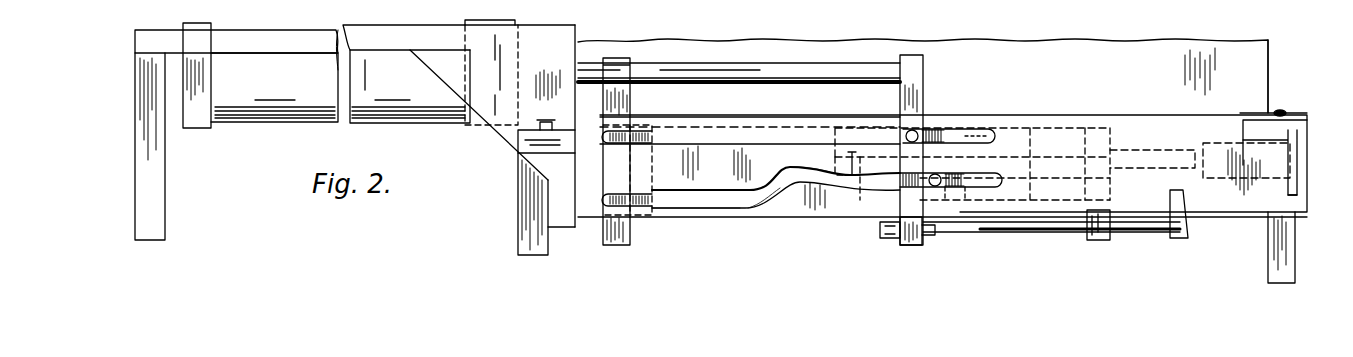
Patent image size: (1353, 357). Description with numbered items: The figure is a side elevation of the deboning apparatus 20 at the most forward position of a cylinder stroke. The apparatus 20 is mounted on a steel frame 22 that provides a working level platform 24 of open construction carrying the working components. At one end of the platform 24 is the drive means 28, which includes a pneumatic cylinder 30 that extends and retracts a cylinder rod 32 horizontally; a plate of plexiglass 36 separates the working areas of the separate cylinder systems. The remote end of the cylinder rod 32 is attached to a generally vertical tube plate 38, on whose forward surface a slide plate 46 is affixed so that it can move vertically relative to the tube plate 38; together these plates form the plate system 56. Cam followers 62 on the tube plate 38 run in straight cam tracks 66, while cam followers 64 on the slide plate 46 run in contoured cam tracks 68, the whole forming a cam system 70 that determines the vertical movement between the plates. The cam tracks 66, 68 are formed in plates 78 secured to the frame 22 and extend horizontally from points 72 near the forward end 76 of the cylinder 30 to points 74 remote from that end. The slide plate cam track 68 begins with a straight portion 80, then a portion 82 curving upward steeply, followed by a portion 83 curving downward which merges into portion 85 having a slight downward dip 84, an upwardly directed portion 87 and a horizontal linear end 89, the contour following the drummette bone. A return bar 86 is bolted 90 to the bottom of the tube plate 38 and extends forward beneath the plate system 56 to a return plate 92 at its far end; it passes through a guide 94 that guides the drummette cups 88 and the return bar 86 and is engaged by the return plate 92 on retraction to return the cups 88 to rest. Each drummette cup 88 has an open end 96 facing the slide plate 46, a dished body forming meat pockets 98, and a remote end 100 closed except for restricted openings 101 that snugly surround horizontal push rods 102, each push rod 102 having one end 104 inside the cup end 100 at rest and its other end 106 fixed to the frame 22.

The apparatus 20 is at (1303, 88).
The frame 22 is at (130, 50).
The working level platform 24 is at (1312, 172).
The drive means 28 is at (183, 83).
The pneumatic cylinder 30 is at (250, 125).
The cylinder rod 32 is at (673, 63).
The plate of plexiglass 36 is at (1268, 62).
The tube plate 38 is at (917, 246).
The slide plate 46 is at (928, 243).
The plate system 56 is at (928, 95).
The cam followers 62 is at (900, 134).
The cam followers 64 is at (945, 188).
The cam tracks 66 is at (732, 130).
The cam tracks 68 is at (698, 194).
The cam system 70 is at (778, 233).
The points 72 is at (604, 195).
The points 74 is at (1000, 178).
The forward end 76 is at (524, 72).
The plates 78 is at (722, 219).
The straight portion 80 is at (678, 208).
The upwardly curving portion 82 is at (770, 217).
The downwardly curving portion 83 is at (810, 167).
The downward dip 84 is at (848, 214).
The portion 85 is at (837, 203).
The return bar 86 is at (1067, 229).
The upwardly directed portion 87 is at (845, 194).
The drummette cups 88 is at (1097, 128).
The linear end 89 is at (983, 188).
The bolt 90 is at (895, 240).
The return plate 92 is at (1180, 240).
The guide 94 is at (1105, 240).
The open end 96 is at (938, 133).
The meat pockets 98 is at (1060, 128).
The remote end 100 is at (1113, 146).
The openings 101 is at (1117, 123).
The push rods 102 is at (1194, 143).
The end 104 is at (836, 128).
The end 106 is at (1292, 157).